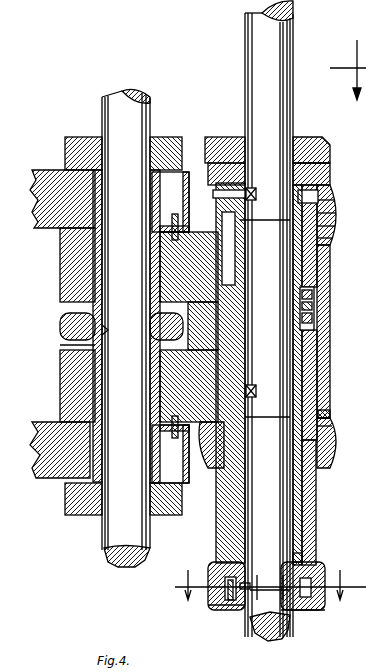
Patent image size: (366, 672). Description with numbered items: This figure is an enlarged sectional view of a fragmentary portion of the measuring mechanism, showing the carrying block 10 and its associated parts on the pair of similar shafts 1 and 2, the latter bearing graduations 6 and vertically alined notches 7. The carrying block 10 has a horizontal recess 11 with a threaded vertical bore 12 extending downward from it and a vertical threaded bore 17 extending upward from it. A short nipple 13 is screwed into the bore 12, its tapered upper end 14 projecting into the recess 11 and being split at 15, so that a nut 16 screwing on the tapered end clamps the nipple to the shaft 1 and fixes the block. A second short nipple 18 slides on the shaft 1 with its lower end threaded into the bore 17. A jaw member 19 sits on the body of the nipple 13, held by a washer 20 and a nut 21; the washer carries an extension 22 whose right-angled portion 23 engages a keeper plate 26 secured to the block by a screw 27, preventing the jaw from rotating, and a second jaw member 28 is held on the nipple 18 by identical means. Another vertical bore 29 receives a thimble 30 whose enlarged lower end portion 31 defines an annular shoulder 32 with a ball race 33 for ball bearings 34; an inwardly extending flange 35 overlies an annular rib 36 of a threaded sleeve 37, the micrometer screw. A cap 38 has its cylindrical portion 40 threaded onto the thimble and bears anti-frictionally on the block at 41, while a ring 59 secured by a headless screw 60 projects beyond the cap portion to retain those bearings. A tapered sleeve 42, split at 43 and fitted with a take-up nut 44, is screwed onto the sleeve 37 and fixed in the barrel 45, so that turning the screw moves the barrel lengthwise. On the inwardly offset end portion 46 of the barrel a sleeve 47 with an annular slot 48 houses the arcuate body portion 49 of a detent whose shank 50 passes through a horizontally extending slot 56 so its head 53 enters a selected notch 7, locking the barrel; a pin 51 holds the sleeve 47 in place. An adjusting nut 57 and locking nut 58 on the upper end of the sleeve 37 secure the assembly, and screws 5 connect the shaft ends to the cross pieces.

The shaft 1 is at (103, 103).
The shaft 2 is at (246, 57).
The screws 5 is at (267, 585).
The graduations 6 is at (270, 590).
The notches 7 is at (256, 192).
The carrying block 10 is at (62, 384).
The horizontal recess 11 is at (62, 345).
The threaded vertical bore 12 is at (62, 398).
The short nipple 13 is at (104, 410).
The tapered upper end 14 is at (104, 332).
The split 15 is at (150, 323).
The nut 16 is at (62, 322).
The vertical threaded bore 17 is at (62, 276).
The second short nipple 18 is at (155, 137).
The jaw member 19 is at (45, 478).
The washer 20 is at (66, 162).
The nut 21 is at (85, 516).
The extension 22 is at (170, 327).
The bent portion 23 is at (174, 327).
The keeper plate 26 is at (174, 322).
The screw 27 is at (150, 225).
The second jaw member 28 is at (50, 232).
The vertical bore 29 is at (318, 390).
The thimble 30 is at (330, 364).
The enlarged lower end portion 31 is at (334, 455).
The annular shoulder 32 is at (332, 420).
The ball race 33 is at (334, 428).
The ball bearings 34 is at (338, 408).
The inwardly extending flange 35 is at (333, 190).
The annular rib 36 is at (308, 213).
The threaded sleeve 37 is at (303, 137).
The cap 38 is at (330, 175).
The cylindrical portion 40 is at (336, 201).
The anti-friction bearings 41 is at (332, 240).
The tapered sleeve 42 is at (314, 320).
The split 43 is at (314, 308).
The screw threaded collar or nut 44 is at (314, 296).
The barrel 45 is at (316, 505).
The inwardly offset end portion 46 is at (315, 611).
The sleeve 47 is at (318, 578).
The annular slot 48 is at (212, 575).
The arcuate body portion 49 is at (210, 605).
The shank 50 is at (230, 605).
The pin 51 is at (305, 560).
The head 53 is at (270, 586).
The horizontally extending slot 56 is at (248, 582).
The adjusting nut 57 is at (330, 165).
The locking nut 58 is at (328, 142).
The ring 59 is at (336, 226).
The headless screw 60 is at (337, 213).